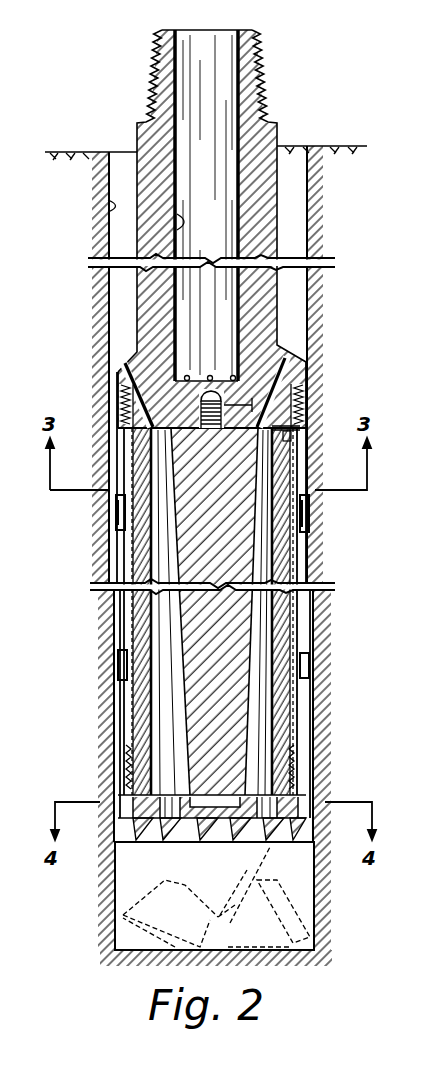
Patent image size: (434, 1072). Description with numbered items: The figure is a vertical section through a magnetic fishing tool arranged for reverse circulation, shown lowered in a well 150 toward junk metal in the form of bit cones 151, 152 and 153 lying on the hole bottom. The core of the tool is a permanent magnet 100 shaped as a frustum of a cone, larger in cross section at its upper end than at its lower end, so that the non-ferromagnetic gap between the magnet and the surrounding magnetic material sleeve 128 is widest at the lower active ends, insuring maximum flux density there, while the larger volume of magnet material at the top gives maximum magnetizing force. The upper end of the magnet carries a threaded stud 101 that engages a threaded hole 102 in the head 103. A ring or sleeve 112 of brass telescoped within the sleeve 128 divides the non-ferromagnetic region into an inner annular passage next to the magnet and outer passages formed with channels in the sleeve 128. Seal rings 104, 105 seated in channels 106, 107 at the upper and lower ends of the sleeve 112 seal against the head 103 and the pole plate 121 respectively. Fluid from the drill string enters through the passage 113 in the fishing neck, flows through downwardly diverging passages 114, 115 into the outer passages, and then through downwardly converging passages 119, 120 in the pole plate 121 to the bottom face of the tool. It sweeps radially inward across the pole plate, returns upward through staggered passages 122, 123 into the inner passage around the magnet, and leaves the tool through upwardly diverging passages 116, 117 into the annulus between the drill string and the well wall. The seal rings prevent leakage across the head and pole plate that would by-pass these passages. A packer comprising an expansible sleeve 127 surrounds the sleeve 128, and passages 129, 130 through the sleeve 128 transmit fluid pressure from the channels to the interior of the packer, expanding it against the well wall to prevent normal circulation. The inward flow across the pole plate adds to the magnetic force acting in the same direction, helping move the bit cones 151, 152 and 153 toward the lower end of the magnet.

The magnet 100 is at (186, 712).
The threaded stud 101 is at (205, 400).
The threaded hole 102 is at (218, 392).
The head 103 is at (255, 405).
The seal ring 104 is at (290, 428).
The seal ring 105 is at (150, 795).
The channel 106 is at (292, 440).
The channel 107 is at (150, 787).
The non-magnetic material sleeve 112 is at (185, 708).
The passage in the fishing neck 113 is at (177, 224).
The fluid passage 114 is at (130, 385).
The fluid passage 115 is at (280, 402).
The fluid passage 116 is at (137, 370).
The fluid passage 117 is at (263, 392).
The fluid passage 119 is at (110, 871).
The fluid passage 120 is at (290, 807).
The pole plate 121 is at (233, 915).
The fluid passage 122 is at (165, 835).
The fluid passage 123 is at (268, 835).
The expansible sleeve 127 is at (117, 536).
The magnetic material sleeve 128 is at (122, 462).
The passage 129 is at (126, 632).
The passage 130 is at (296, 568).
The well 150 is at (108, 216).
The bit cone 151 is at (125, 937).
The bit cone 152 is at (200, 947).
The bit cone 153 is at (283, 953).